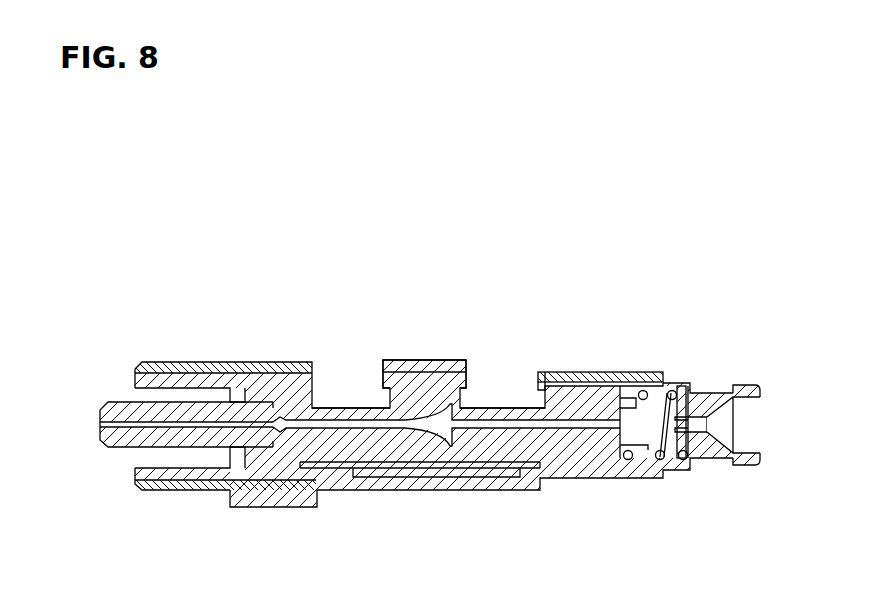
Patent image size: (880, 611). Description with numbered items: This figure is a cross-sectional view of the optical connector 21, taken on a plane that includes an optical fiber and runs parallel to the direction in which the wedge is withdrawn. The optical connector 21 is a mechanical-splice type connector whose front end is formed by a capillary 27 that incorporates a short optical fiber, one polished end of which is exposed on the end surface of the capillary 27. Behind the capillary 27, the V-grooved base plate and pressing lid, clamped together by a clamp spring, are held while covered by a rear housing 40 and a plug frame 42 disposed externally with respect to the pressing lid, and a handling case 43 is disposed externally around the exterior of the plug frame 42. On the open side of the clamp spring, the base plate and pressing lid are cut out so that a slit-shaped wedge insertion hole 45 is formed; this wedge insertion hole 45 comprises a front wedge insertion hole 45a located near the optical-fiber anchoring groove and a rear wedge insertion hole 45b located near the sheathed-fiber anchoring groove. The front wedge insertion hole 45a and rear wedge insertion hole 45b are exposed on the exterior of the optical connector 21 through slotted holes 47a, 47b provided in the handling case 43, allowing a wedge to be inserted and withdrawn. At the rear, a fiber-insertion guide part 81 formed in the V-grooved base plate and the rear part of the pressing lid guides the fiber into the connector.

The optical connector 21 is at (362, 200).
The capillary 27 is at (100, 404).
The rear housing 40 is at (738, 466).
The plug frame 42 is at (135, 375).
The handling case 43 is at (135, 490).
The wedge insertion hole 45 is at (540, 233).
The front wedge insertion hole 45a is at (345, 405).
The rear wedge insertion hole 45b is at (480, 405).
The slotted hole 47a is at (338, 388).
The slotted hole 47b is at (515, 372).
The fiber-insertion guide part 81 is at (657, 410).